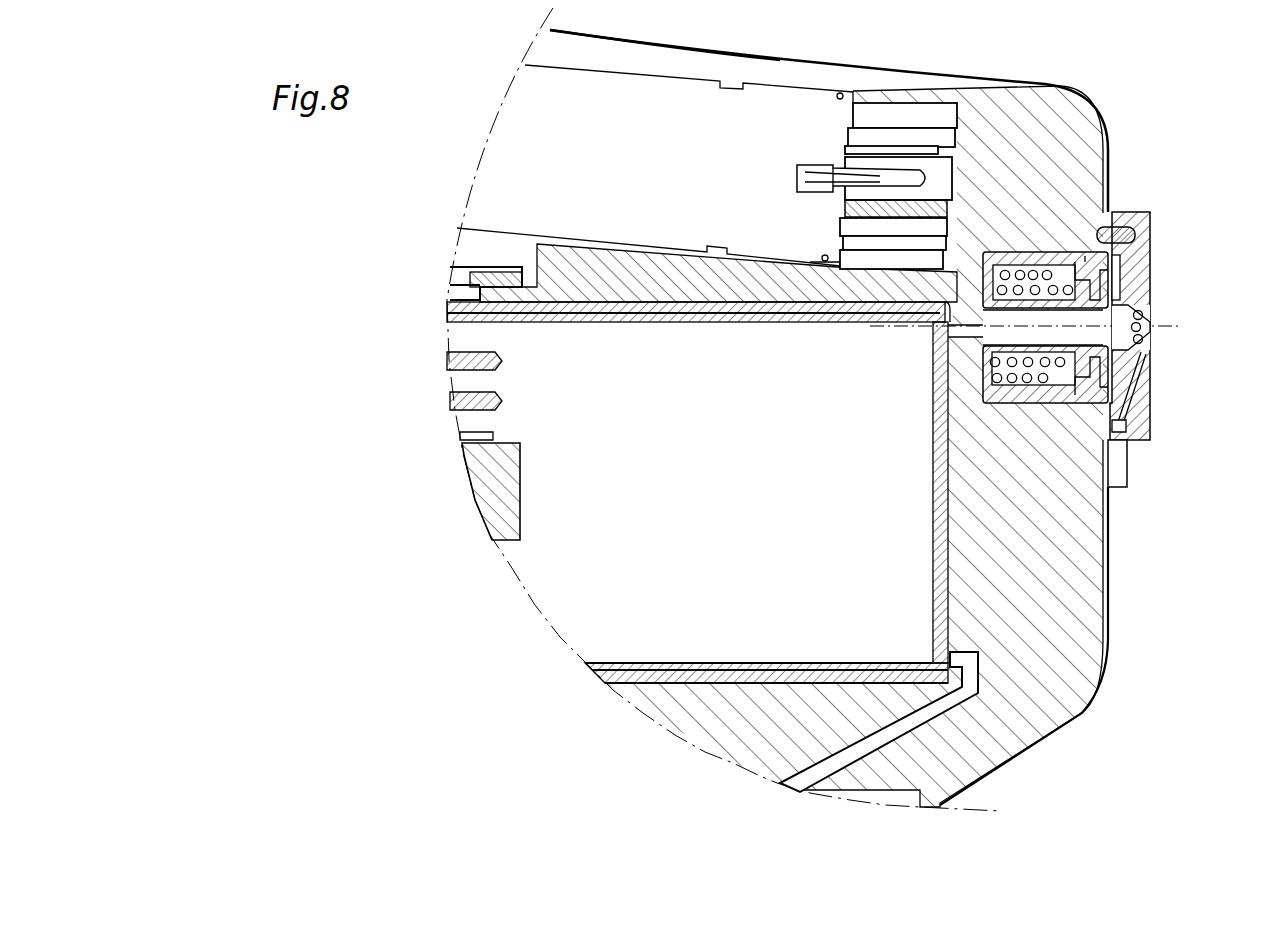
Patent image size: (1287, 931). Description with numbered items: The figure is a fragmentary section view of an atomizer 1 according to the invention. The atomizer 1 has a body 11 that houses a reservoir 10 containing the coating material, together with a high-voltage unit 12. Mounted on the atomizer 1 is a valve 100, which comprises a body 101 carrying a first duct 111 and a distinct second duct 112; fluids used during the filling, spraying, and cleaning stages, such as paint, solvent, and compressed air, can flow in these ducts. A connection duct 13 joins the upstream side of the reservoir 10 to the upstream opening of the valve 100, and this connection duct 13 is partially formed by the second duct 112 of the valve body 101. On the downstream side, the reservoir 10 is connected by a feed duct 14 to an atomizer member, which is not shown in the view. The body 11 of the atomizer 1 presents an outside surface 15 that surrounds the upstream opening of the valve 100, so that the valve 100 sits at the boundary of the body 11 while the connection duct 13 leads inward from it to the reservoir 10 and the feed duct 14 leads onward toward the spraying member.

The atomizer 1 is at (389, 239).
The reservoir 10 is at (698, 492).
The body 11 is at (565, 47).
The high-voltage unit 12 is at (703, 183).
The connection duct 13 is at (965, 250).
The feed duct 14 is at (780, 784).
The outside surface 15 is at (1106, 568).
The valve 100 is at (1043, 199).
The body 101 is at (1153, 240).
The first duct 111 is at (1152, 430).
The second duct 112 is at (1047, 327).